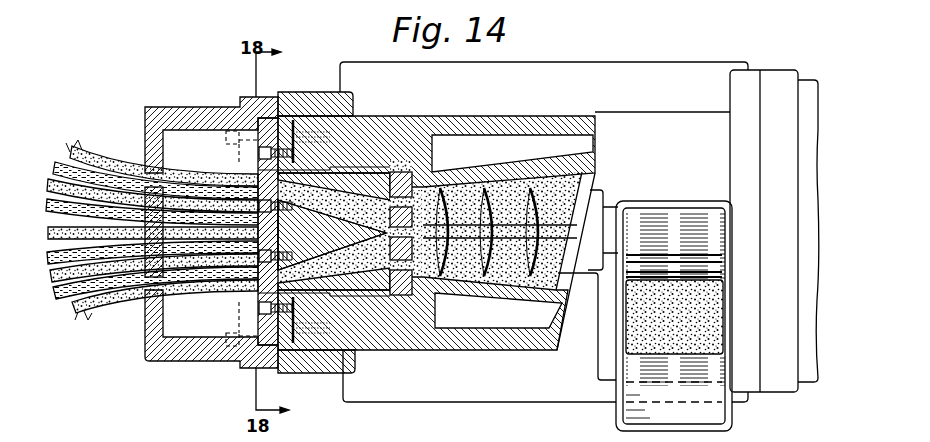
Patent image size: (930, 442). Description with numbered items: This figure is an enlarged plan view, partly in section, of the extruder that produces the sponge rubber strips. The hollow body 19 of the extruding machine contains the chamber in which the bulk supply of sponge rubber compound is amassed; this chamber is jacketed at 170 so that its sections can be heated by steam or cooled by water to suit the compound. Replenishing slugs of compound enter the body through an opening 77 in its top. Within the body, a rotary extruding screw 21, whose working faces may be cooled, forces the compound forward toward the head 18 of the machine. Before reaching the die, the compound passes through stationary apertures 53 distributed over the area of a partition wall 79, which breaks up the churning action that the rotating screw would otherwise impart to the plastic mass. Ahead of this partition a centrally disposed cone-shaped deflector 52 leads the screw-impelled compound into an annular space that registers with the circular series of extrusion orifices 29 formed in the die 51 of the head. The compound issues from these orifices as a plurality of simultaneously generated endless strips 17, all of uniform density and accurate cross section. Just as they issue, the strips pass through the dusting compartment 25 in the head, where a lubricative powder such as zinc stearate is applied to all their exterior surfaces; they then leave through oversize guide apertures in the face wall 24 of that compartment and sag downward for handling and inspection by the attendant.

The strips 17 is at (76, 158).
The head 18 is at (322, 112).
The hollow body 19 is at (578, 180).
The extruding screw 21 is at (506, 272).
The face wall 24 is at (146, 157).
The dusting compartment 25 is at (192, 137).
The orifices 29 is at (257, 168).
The die 51 is at (266, 168).
The cone-shaped deflector 52 is at (278, 238).
The stationary apertures 53 is at (391, 262).
The opening 77 is at (668, 292).
The partition wall 79 is at (401, 185).
The jacket 170 is at (512, 153).